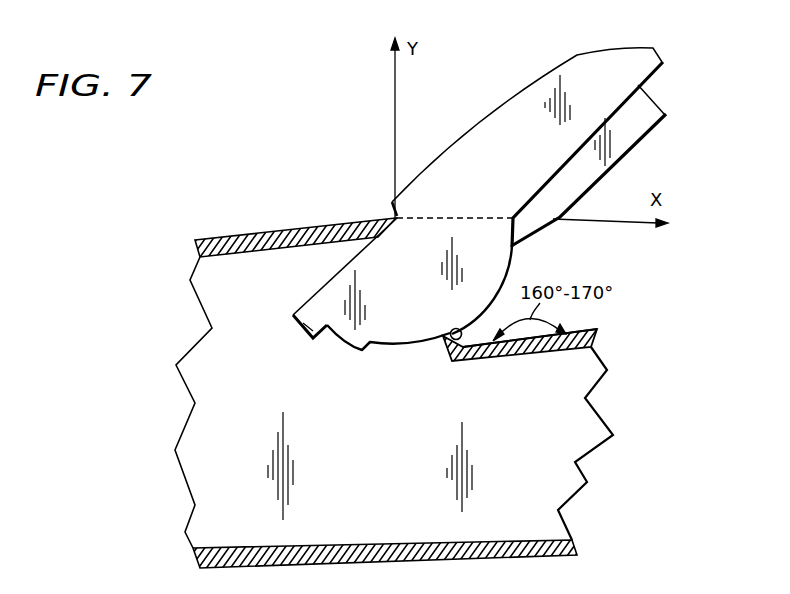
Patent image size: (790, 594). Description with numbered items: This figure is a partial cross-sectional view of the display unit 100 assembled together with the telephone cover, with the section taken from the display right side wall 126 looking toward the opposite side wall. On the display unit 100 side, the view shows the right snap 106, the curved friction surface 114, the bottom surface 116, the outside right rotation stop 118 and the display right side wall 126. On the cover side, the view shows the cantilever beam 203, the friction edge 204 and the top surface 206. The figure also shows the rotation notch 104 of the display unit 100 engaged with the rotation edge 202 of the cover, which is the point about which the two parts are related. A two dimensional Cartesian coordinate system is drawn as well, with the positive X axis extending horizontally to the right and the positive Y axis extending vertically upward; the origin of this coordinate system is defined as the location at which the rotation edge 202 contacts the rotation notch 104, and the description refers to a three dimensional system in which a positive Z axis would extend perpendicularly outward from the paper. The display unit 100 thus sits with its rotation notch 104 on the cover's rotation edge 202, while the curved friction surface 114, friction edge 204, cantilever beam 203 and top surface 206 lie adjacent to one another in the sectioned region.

The display unit 100 is at (625, 53).
The bottom surface 116 is at (635, 122).
The display right side wall 126 is at (531, 154).
The rotation edge 202 is at (366, 206).
The rotation notch 104 is at (402, 276).
The right snap 106 is at (306, 323).
The outside right rotation stop 118 is at (355, 352).
The curved friction surface 114 is at (405, 346).
The friction edge 204 is at (441, 342).
The cantilever beam 203 is at (495, 360).
The top surface 206 is at (593, 330).